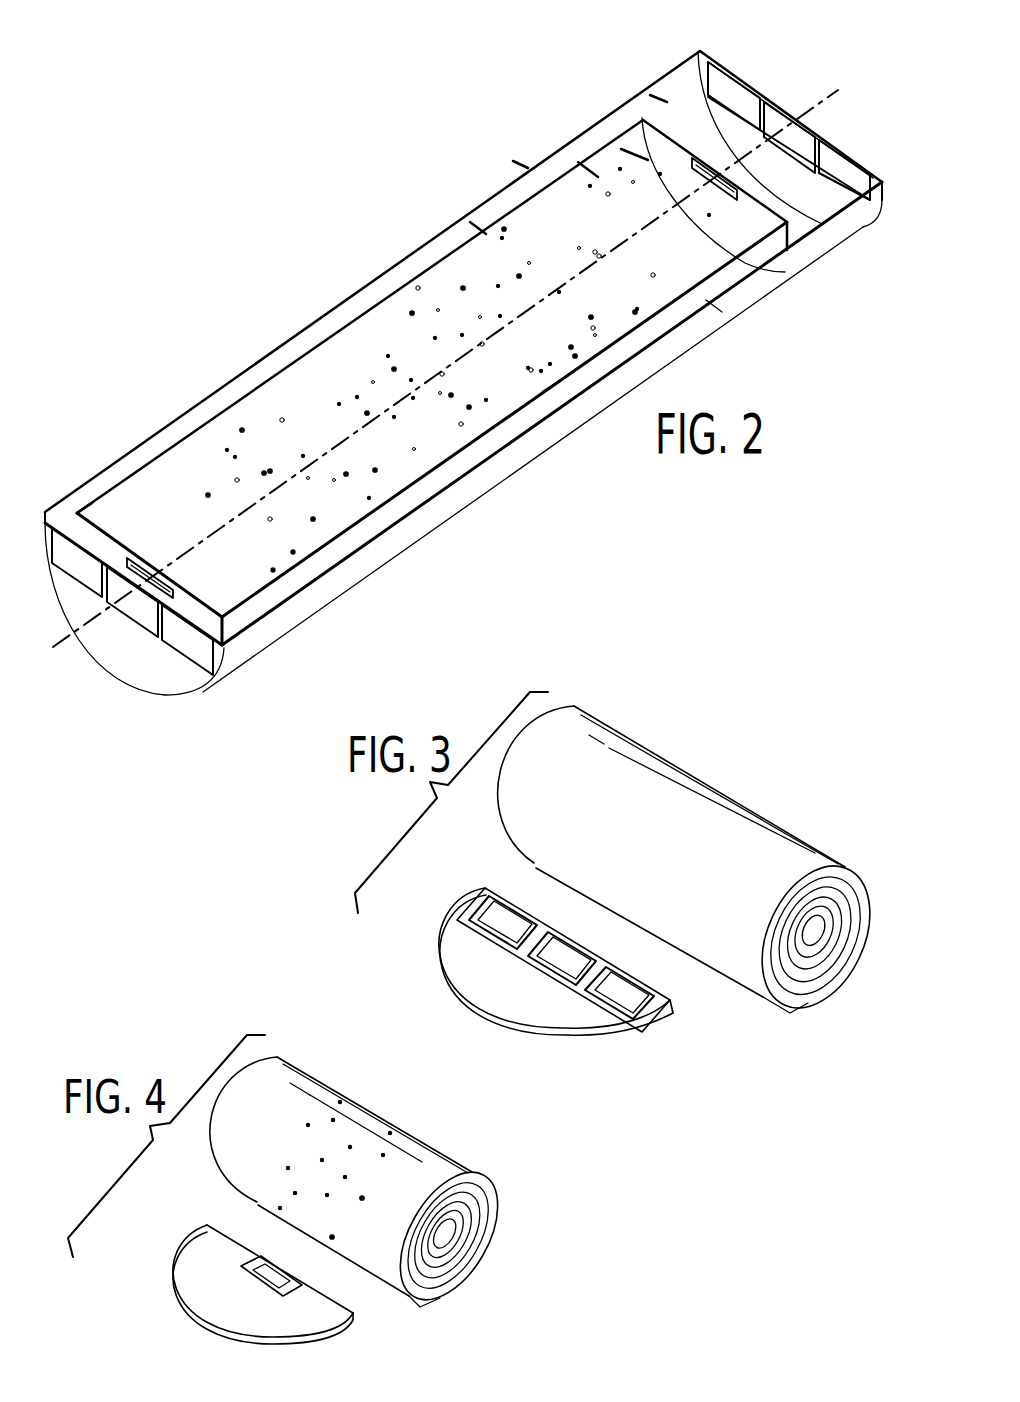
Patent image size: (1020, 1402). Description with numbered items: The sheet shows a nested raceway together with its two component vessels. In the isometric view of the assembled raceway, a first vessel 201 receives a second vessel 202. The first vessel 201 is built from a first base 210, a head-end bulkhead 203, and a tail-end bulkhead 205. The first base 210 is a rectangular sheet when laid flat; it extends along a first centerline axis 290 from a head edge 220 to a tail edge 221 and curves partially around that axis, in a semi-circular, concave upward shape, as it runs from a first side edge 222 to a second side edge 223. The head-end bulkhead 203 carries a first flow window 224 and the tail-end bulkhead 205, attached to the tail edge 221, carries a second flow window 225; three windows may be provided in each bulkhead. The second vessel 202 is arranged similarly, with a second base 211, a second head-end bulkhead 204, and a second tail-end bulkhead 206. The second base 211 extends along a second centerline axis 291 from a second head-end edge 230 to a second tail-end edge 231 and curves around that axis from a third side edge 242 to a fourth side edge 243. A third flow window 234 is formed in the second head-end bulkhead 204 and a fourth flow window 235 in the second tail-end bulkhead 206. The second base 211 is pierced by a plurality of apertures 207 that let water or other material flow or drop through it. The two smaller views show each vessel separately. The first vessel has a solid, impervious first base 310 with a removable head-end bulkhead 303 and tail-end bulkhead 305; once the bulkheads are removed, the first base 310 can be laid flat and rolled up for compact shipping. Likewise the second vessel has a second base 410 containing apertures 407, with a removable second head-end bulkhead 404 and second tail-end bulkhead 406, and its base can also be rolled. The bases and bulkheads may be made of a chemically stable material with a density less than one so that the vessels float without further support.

In FIG. 2, the first vessel 201 is at (394, 548).
In FIG. 2, the second vessel 202 is at (340, 555).
In FIG. 2, the head-end bulkhead 203 is at (125, 655).
In FIG. 2, the second head-end bulkhead 204 is at (200, 613).
In FIG. 2, the tail-end bulkhead 205 is at (772, 167).
In FIG. 2, the second tail-end bulkhead 206 is at (735, 200).
In FIG. 2, the apertures 207 is at (293, 552).
In FIG. 2, the first base 210 is at (652, 96).
In FIG. 2, the second base 211 is at (580, 163).
In FIG. 2, the head edge 220 is at (42, 512).
In FIG. 2, the tail edge 221 is at (700, 63).
In FIG. 2, the first side edge 222 is at (714, 305).
In FIG. 2, the second side edge 223 is at (515, 162).
In FIG. 2, the first flow window 224 is at (130, 603).
In FIG. 2, the second flow window 225 is at (773, 110).
In FIG. 2, the second head-end edge 230 is at (75, 513).
In FIG. 2, the second tail-end edge 231 is at (623, 150).
In FIG. 2, the third flow window 234 is at (140, 600).
In FIG. 2, the fourth flow window 235 is at (763, 222).
In FIG. 2, the third side edge 242 is at (550, 392).
In FIG. 2, the fourth side edge 243 is at (478, 228).
In FIG. 2, the first centerline axis 290 is at (815, 100).
In FIG. 2, the second centerline axis 291 is at (217, 535).
In FIG. 3, the first base 310 is at (653, 792).
In FIG. 3, the head-end bulkhead 303 is at (479, 995).
In FIG. 3, the tail-end bulkhead 305 is at (556, 1034).
In FIG. 4, the second base 410 is at (428, 1173).
In FIG. 4, the apertures 407 is at (332, 1237).
In FIG. 4, the second head-end bulkhead 404 is at (193, 1303).
In FIG. 4, the second tail-end bulkhead 406 is at (267, 1343).